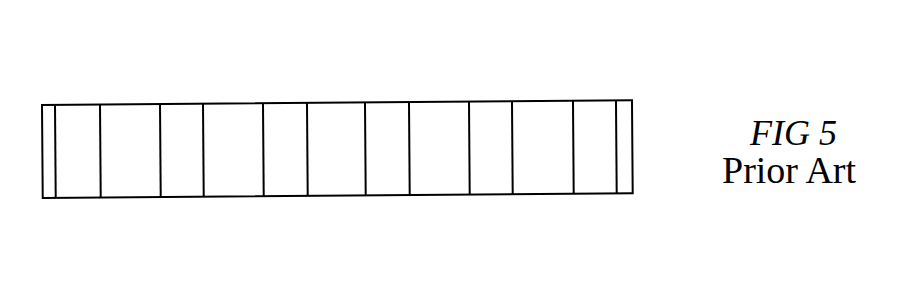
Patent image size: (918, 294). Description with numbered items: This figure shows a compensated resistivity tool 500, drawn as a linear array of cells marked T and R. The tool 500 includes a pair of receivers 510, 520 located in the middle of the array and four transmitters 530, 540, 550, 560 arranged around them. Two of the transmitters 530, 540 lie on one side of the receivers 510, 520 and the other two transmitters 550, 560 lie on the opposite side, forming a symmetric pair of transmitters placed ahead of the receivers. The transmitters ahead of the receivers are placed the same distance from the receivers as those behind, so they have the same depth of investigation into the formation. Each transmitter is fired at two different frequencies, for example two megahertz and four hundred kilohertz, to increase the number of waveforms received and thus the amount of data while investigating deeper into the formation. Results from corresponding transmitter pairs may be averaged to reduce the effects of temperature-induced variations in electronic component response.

The resistivity tool 500 is at (226, 84).
The receiver 510 is at (278, 200).
The receiver 520 is at (383, 197).
The transmitter 530 is at (70, 200).
The transmitter 540 is at (172, 200).
The transmitter 550 is at (492, 197).
The transmitter 560 is at (593, 197).